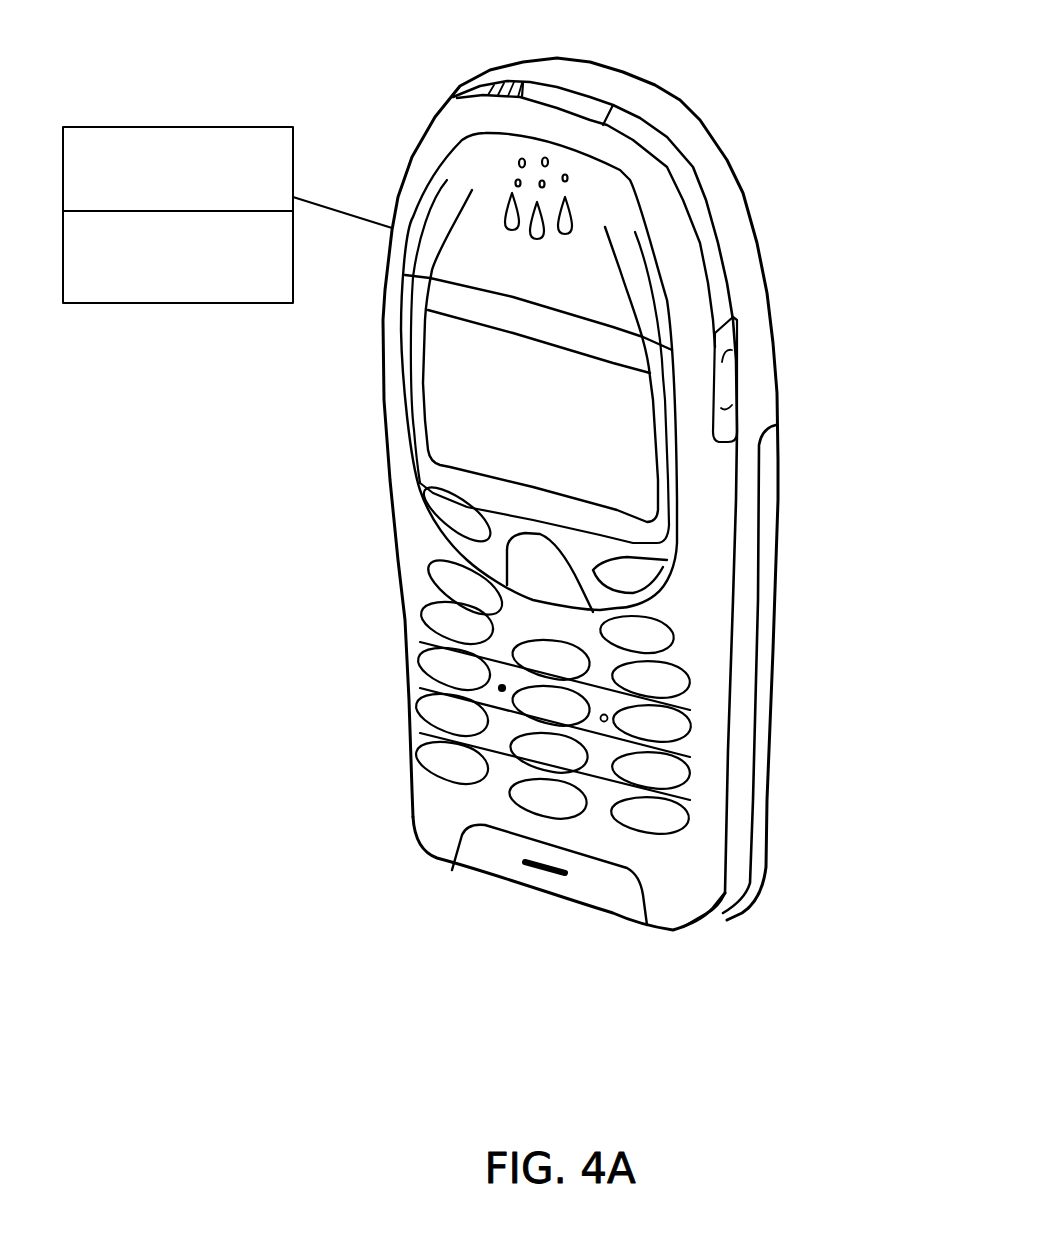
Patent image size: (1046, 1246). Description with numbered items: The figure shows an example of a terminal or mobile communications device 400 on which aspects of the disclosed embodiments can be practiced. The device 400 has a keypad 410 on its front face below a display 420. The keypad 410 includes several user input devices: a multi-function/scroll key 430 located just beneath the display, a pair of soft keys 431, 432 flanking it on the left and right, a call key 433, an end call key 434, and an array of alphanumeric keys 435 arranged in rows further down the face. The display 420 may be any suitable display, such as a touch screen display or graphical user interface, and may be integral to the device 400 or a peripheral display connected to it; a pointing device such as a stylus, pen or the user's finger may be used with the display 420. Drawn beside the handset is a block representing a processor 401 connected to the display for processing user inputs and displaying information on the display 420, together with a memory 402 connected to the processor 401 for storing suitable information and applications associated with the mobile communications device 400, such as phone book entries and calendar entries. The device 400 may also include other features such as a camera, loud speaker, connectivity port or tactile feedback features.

The mobile communications device 400 is at (714, 72).
The processor 401 is at (173, 127).
The memory 402 is at (173, 303).
The keypad 410 is at (672, 840).
The display 420 is at (608, 453).
The multi-function/scroll key 430 is at (562, 577).
The soft key 431 is at (457, 525).
The soft key 432 is at (633, 578).
The call key 433 is at (456, 577).
The end call key 434 is at (643, 633).
The alphanumeric keys 435 is at (457, 763).